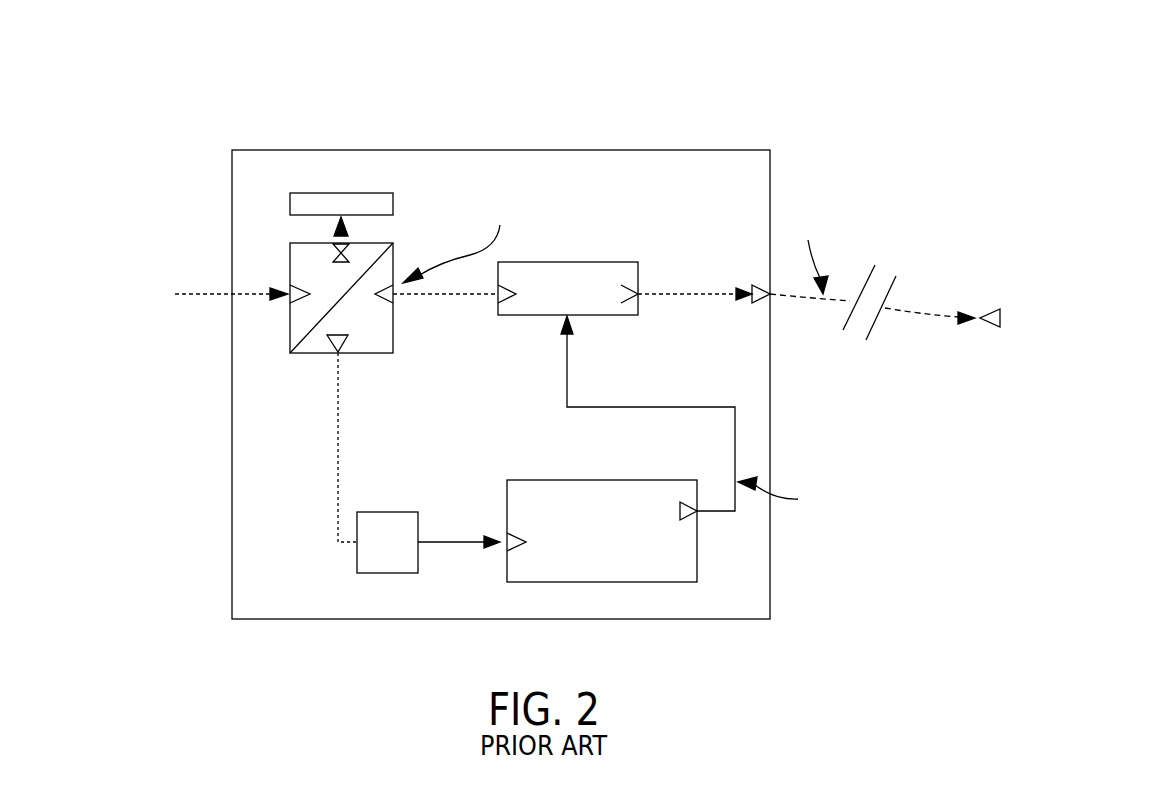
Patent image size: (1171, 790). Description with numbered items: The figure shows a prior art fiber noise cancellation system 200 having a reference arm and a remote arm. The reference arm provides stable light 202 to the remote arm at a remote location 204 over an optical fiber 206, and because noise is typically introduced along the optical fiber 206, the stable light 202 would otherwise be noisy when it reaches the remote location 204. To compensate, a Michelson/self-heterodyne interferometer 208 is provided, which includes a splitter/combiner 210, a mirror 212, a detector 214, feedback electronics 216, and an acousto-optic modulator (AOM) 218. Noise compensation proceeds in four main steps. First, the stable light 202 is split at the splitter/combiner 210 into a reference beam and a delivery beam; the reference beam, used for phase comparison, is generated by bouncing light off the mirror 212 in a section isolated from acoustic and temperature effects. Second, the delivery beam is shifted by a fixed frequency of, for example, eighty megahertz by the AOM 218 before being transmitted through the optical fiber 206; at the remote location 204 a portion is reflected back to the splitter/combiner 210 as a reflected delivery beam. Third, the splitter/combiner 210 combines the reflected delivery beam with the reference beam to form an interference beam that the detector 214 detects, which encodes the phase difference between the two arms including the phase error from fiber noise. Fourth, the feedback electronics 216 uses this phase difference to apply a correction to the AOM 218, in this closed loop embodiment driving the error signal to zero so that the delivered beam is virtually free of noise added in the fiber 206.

The fiber noise cancellation system 200 is at (962, 92).
The stable light 202 is at (108, 272).
The remote location 204 is at (1088, 272).
The optical fiber 206 is at (932, 317).
The Michelson/self-heterodyne interferometer 208 is at (672, 150).
The splitter/combiner 210 is at (297, 356).
The mirror 212 is at (305, 193).
The detector 214 is at (385, 512).
The feedback electronics 216 is at (528, 480).
The acousto-optic modulator (AOM) 218 is at (610, 262).